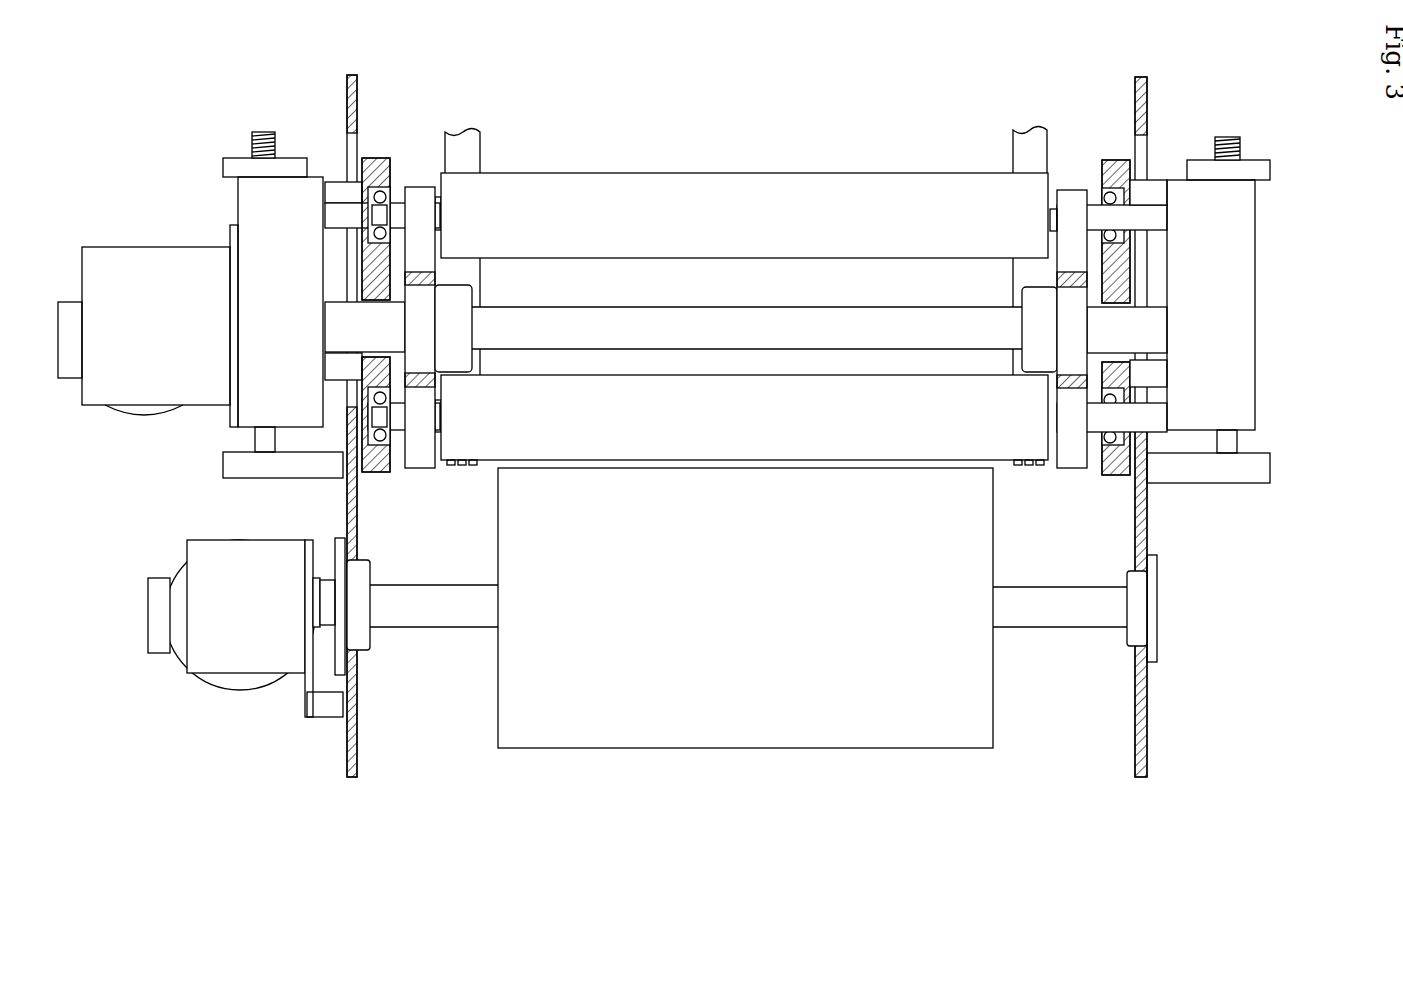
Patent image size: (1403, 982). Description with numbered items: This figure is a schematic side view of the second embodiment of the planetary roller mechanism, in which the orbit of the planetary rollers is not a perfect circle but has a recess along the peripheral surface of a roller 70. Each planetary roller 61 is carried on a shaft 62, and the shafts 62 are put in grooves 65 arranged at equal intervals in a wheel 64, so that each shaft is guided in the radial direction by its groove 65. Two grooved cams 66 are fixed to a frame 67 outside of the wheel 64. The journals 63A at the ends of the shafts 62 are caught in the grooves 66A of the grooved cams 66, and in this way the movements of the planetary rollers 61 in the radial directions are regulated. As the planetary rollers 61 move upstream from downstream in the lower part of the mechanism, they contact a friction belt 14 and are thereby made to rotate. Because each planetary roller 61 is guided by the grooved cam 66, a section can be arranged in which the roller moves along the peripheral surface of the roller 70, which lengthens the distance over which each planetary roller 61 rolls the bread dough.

The friction belt 14 is at (465, 465).
The planetary roller 61 is at (890, 192).
The shaft 62 is at (418, 216).
The journal 63A is at (397, 188).
The wheel 64 is at (1073, 195).
The groove 65 is at (423, 251).
The grooved cam 66 is at (380, 158).
The groove of grooved cam 66A is at (363, 192).
The frame 67 is at (258, 215).
The roller 70 is at (891, 710).